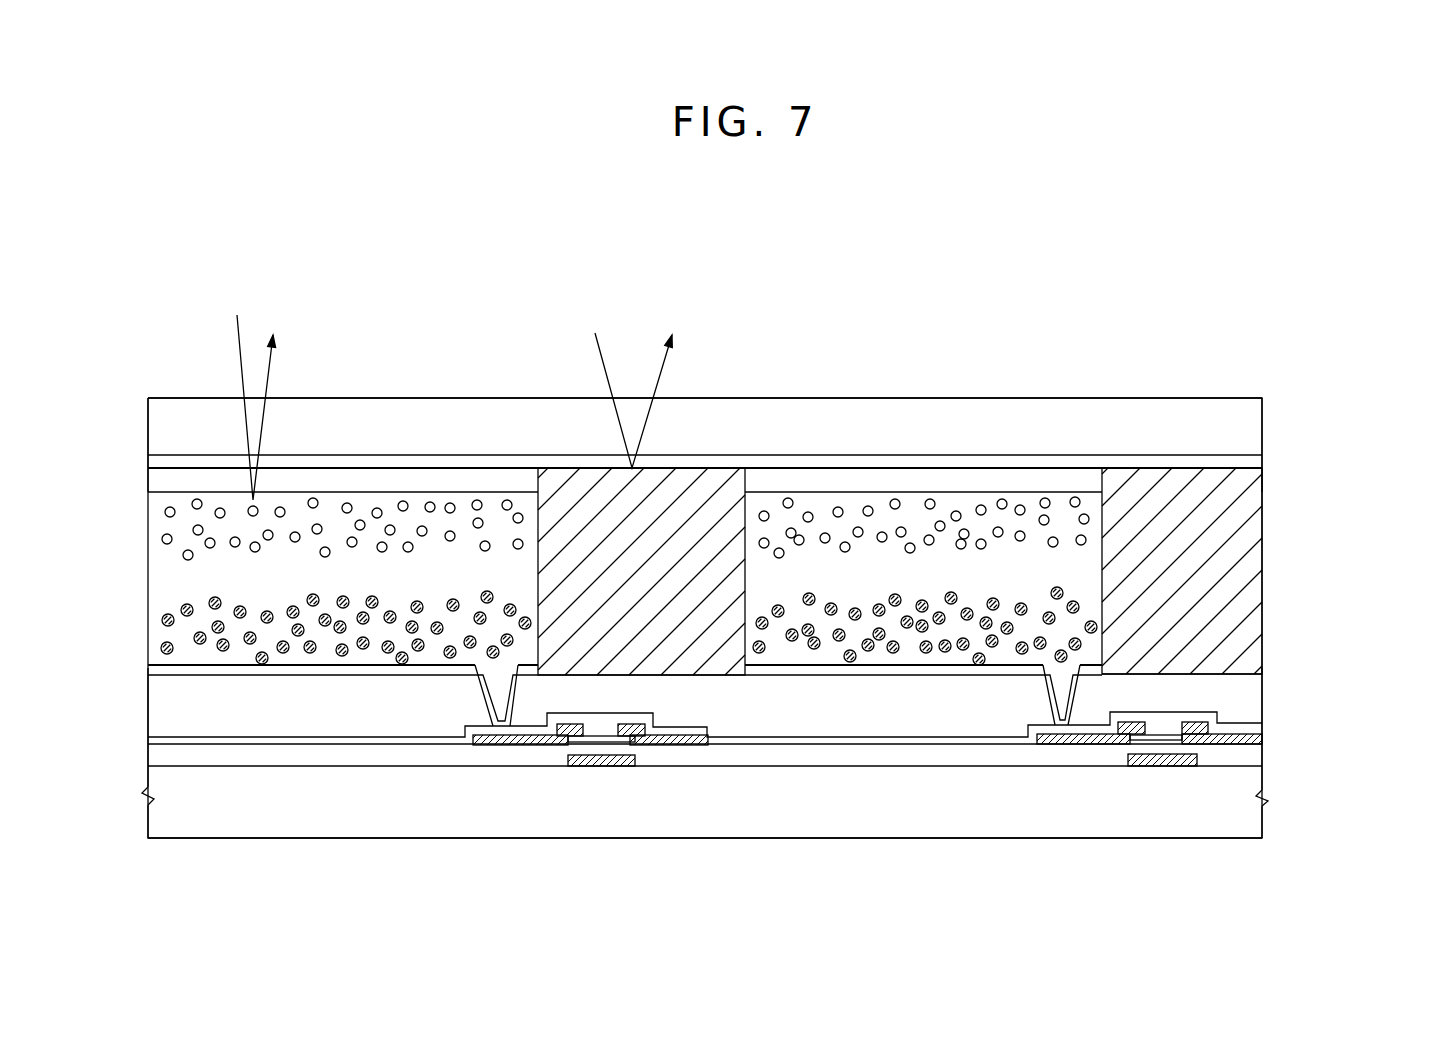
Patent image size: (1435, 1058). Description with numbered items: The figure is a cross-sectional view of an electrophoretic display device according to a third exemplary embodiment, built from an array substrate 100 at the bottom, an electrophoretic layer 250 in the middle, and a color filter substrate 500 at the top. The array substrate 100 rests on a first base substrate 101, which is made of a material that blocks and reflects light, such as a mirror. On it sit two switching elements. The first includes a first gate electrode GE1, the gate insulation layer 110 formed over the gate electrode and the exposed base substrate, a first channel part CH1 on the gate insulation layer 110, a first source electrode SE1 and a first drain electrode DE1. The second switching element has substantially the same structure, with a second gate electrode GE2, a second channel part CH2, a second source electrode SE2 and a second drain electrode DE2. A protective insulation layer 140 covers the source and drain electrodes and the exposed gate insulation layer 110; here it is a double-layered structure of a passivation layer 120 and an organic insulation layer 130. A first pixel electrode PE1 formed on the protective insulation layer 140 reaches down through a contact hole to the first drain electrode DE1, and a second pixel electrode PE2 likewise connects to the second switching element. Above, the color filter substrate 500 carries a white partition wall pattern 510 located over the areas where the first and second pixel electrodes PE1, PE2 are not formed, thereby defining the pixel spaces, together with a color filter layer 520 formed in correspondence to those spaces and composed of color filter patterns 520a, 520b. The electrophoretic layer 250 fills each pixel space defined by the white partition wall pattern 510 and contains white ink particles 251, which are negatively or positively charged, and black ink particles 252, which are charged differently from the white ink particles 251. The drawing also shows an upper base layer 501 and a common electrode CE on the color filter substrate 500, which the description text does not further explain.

The color filter substrate 500 is at (138, 398).
The upper substrate 501 is at (1255, 420).
The common electrode CE is at (1257, 462).
The white partition wall pattern 510 is at (1245, 592).
The color filter layer 520 is at (842, 315).
The color filter pattern 520a is at (485, 478).
The color filter pattern 520b is at (812, 478).
The electrophoretic layer 250 is at (138, 495).
The white ink particle 251 is at (343, 500).
The black ink particle 252 is at (413, 600).
The array substrate 100 is at (138, 668).
The first base substrate 101 is at (1255, 786).
The gate insulation layer 110 is at (1255, 757).
The passivation layer 120 is at (1255, 728).
The organic insulation layer 130 is at (1255, 697).
The protective insulation layer 140 is at (1358, 683).
The first pixel electrode PE1 is at (338, 672).
The second pixel electrode PE2 is at (828, 672).
The first drain electrode DE1 is at (513, 747).
The first gate electrode GE1 is at (582, 767).
The first channel part CH1 is at (607, 745).
The first source electrode SE1 is at (682, 747).
The second drain electrode DE2 is at (1073, 744).
The second gate electrode GE2 is at (1140, 767).
The second channel part CH2 is at (1160, 744).
The second source electrode SE2 is at (1227, 744).